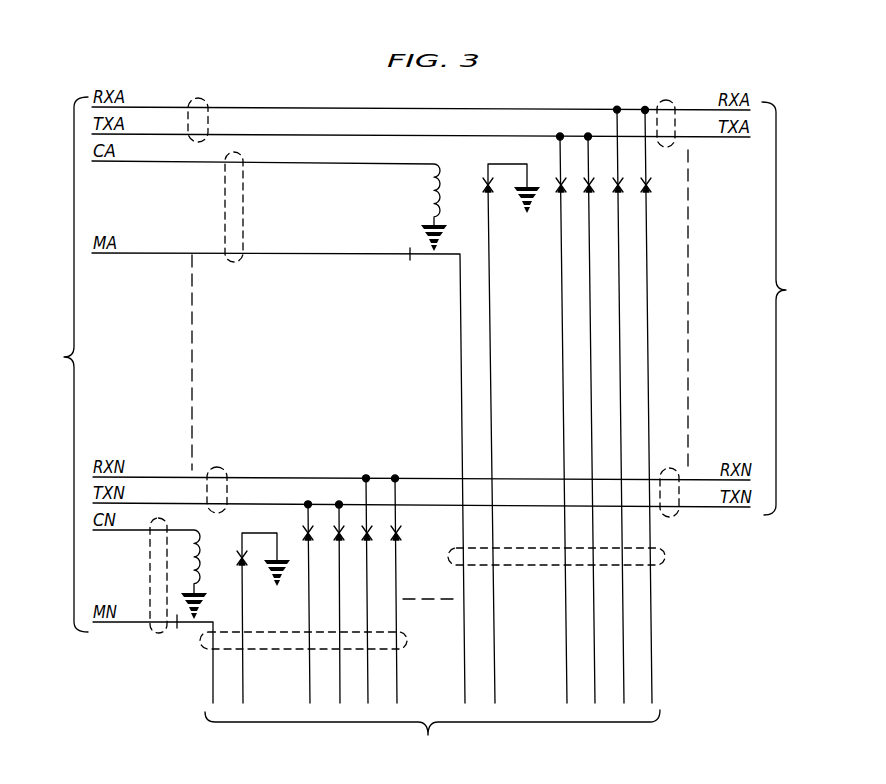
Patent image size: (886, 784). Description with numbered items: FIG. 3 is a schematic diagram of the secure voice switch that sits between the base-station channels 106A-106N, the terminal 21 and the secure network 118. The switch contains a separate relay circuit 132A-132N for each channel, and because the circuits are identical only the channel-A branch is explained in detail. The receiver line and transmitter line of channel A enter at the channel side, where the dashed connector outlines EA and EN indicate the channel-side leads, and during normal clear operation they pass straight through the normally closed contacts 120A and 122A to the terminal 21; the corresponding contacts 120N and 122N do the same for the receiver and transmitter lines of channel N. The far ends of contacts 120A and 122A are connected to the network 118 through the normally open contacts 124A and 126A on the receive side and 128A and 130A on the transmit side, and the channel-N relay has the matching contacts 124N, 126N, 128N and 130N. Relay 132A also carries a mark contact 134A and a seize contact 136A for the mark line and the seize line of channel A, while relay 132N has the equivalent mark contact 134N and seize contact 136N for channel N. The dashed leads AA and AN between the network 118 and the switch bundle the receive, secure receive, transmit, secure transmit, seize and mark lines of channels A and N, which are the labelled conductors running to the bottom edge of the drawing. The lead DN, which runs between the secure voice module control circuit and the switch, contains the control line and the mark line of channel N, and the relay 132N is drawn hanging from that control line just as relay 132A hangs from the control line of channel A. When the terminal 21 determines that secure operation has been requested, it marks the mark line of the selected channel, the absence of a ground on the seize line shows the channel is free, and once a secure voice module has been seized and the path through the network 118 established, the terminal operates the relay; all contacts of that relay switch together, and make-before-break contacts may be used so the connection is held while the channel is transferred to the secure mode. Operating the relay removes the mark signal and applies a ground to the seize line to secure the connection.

The terminal 21 is at (64, 364).
The secure network 118 is at (427, 713).
The channels 106A-106N is at (788, 308).
The normally closed contact 120A is at (629, 116).
The normally closed contact 122A is at (572, 143).
The normally opened contact 124A is at (645, 194).
The normally opened contact 126A is at (617, 194).
The normally opened contact 128A is at (588, 194).
The normally opened contact 130A is at (559, 192).
The relay circuit 132A is at (433, 190).
The mark contact 134A is at (408, 260).
The seize contact 136A is at (486, 182).
The normally closed contact 120N is at (381, 480).
The normally closed contact 122N is at (324, 500).
The normally opened contact 124N is at (425, 528).
The normally opened contact 126N is at (365, 543).
The normally opened contact 128N is at (337, 543).
The normally opened contact 130N is at (306, 543).
The relay circuit 132N is at (193, 548).
The mark contact 134N is at (178, 618).
The seize contact 136N is at (240, 557).
The lead AA is at (199, 100).
The lead DN is at (241, 262).
The connector EA is at (666, 104).
The lead AN is at (214, 468).
The connector EN is at (667, 468).